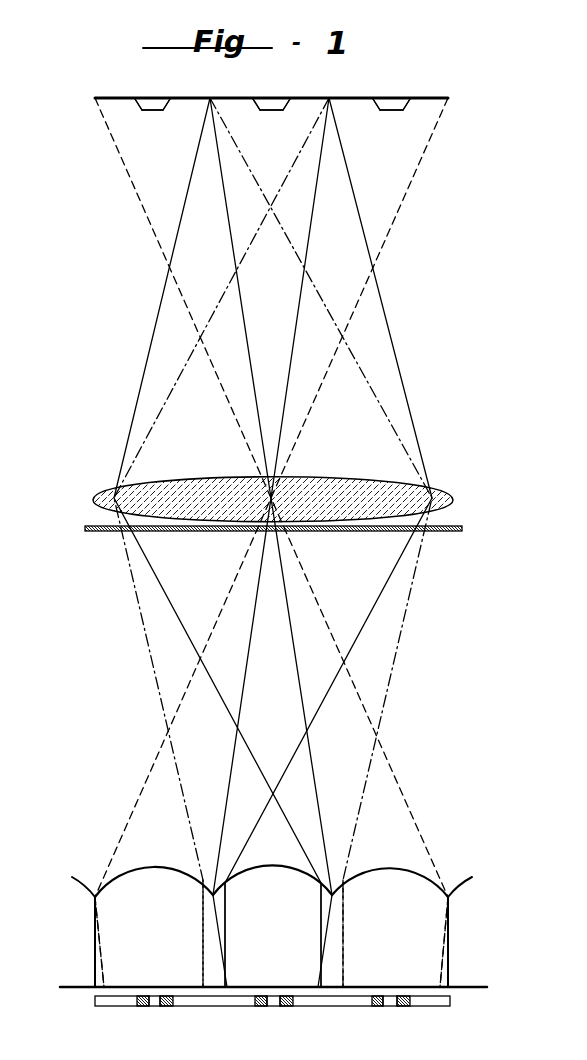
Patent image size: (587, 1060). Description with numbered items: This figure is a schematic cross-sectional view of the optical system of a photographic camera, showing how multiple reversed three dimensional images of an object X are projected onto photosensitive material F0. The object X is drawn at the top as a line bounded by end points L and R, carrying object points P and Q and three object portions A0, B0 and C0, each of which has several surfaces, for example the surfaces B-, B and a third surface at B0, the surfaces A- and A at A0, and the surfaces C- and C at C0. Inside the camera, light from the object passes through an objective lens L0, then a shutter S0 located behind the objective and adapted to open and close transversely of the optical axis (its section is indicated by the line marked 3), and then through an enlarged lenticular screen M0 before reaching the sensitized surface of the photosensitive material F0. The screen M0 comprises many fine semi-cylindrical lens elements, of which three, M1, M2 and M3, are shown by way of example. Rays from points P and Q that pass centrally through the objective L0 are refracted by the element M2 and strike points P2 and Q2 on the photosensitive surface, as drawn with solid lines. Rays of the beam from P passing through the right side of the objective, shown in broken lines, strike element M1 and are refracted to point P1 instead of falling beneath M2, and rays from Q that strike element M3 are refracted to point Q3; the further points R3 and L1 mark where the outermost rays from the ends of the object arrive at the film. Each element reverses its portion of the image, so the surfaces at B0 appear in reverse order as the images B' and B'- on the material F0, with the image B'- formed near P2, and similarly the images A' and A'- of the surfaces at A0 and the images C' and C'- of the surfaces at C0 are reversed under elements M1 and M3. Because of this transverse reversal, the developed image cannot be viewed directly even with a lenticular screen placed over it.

The object X is at (295, 100).
The left end point of object plane L is at (263, 534).
The right end point of object plane R is at (277, 533).
The point P is at (273, 532).
The point Q is at (273, 533).
The object surface A0 is at (170, 96).
The object surface B0 is at (289, 96).
The object surface C0 is at (408, 96).
The surface A− A- is at (140, 111).
The surface A is at (152, 127).
The surface B− B- is at (258, 111).
The surface B is at (271, 127).
The surface C− C- is at (378, 111).
The surface C is at (391, 127).
The objective lens L0 is at (453, 500).
The shutter S0 is at (462, 529).
The section line 3- 3 is at (97, 547).
The lenticular screen M0 is at (279, 916).
The lenticular element M1 is at (383, 876).
The lenticular element M2 is at (264, 876).
The lenticular element M3 is at (148, 876).
The image point R3 is at (110, 943).
The point Q3 is at (192, 934).
The image point Q2 is at (237, 936).
The image point P2 is at (309, 936).
The point P1 is at (351, 934).
The image point L1 is at (434, 943).
The photosensitive material F0 is at (288, 1017).
The film image element C C' is at (153, 1017).
The film image element C- C'- is at (176, 1017).
The film image element B B' is at (273, 1017).
The image B′− B'- is at (294, 1017).
The film image element A A' is at (389, 1017).
The film image element A- A'- is at (411, 1017).